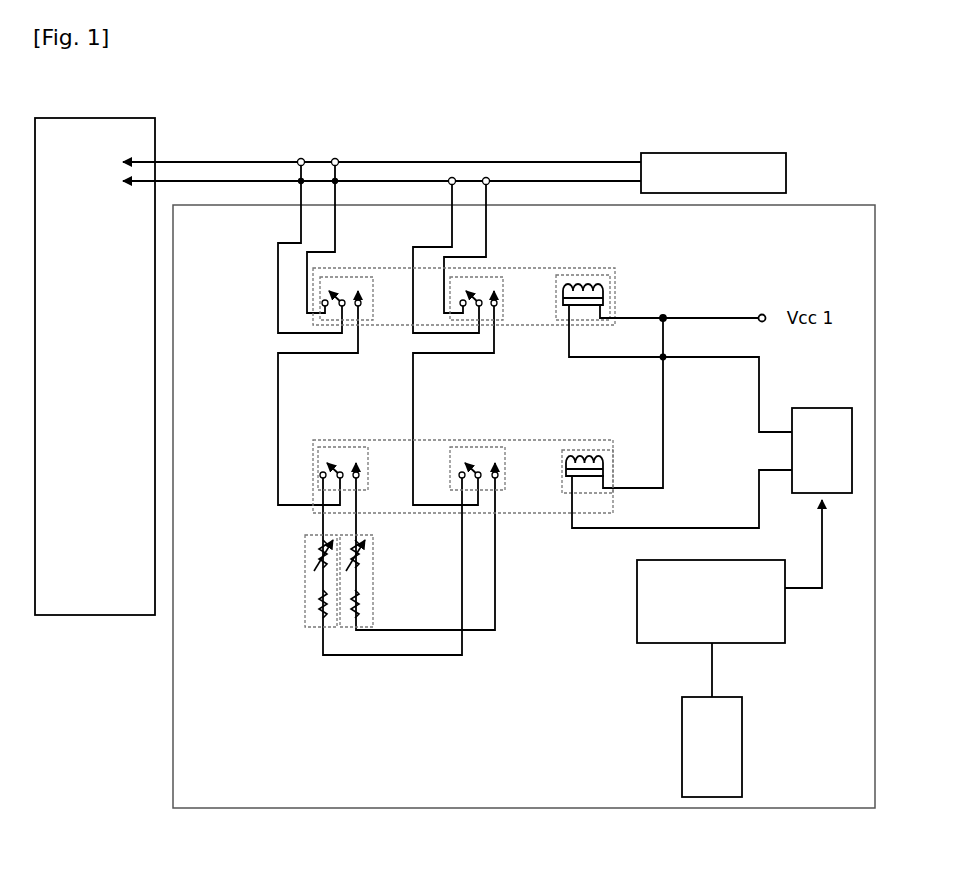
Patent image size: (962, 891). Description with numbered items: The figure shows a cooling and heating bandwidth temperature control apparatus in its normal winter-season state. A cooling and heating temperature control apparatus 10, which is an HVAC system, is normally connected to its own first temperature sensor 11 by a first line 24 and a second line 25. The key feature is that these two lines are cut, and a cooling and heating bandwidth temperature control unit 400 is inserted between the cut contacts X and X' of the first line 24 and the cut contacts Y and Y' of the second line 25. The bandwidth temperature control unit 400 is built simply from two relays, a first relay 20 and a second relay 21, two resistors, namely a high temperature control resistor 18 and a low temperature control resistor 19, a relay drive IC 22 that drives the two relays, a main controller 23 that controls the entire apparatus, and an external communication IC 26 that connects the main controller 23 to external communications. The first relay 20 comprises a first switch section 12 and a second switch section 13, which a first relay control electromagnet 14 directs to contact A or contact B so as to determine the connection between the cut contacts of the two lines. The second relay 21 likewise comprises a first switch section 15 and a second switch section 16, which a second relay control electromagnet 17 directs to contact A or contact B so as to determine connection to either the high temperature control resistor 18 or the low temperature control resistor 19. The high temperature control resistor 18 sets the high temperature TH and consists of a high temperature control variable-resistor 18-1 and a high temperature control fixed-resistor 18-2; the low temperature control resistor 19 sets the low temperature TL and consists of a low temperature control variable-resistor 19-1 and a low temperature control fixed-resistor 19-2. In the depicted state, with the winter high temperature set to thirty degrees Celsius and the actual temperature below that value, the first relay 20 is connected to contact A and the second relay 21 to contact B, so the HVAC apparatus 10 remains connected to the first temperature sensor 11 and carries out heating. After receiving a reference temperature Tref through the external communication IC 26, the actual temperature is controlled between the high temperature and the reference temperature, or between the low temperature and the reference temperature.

The cooling and heating temperature control apparatus 10 is at (95, 366).
The first temperature sensor 11 is at (713, 173).
The first switch section of the first relay 12 is at (368, 270).
The second switch section of the first relay 13 is at (497, 275).
The first relay control electromagnet 14 is at (583, 275).
The first switch section of the second relay 15 is at (345, 439).
The second switch section of the second relay 16 is at (480, 440).
The second relay control electromagnet 17 is at (583, 450).
The high temperature control resistor 18 is at (269, 624).
The high temperature control variable-resistor 18-1 is at (303, 542).
The high temperature control fixed-resistor 18-2 is at (305, 595).
The low temperature control resistor 19 is at (409, 632).
The low temperature control variable-resistor 19-1 is at (358, 562).
The low temperature control fixed-resistor 19-2 is at (357, 612).
The first relay 20 is at (612, 272).
The second relay 21 is at (544, 513).
The relay drive IC 22 is at (822, 450).
The main controller 23 is at (729, 571).
The first line 24 is at (510, 162).
The second line 25 is at (573, 181).
The external communication IC 26 is at (712, 720).
The cooling and heating bandwidth temperature control unit 400 is at (508, 808).